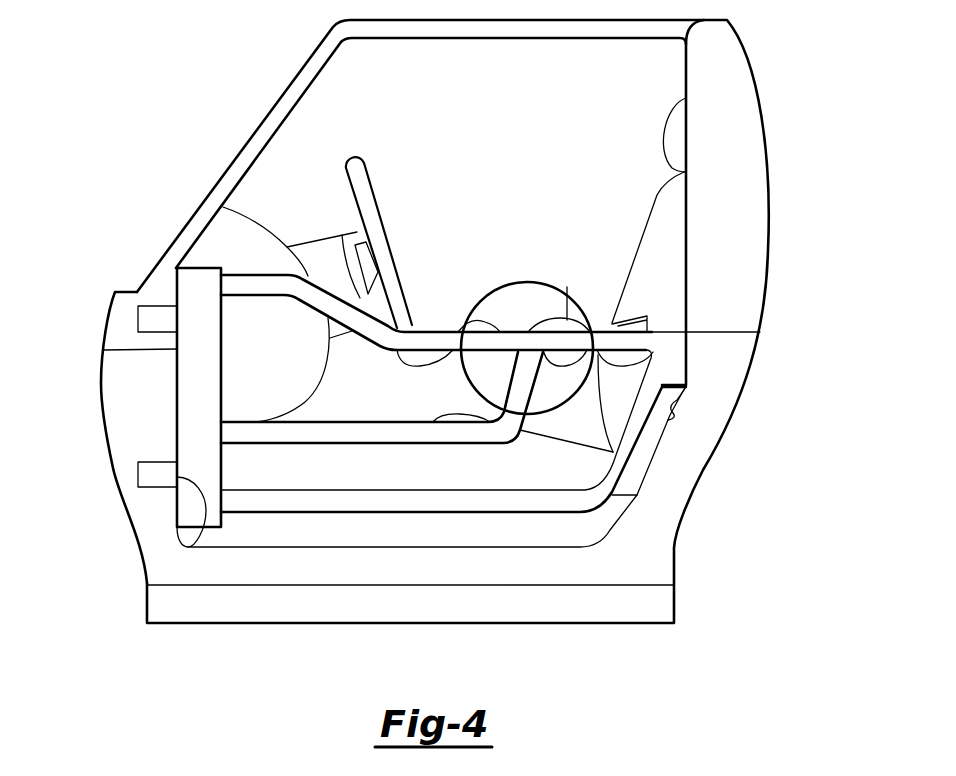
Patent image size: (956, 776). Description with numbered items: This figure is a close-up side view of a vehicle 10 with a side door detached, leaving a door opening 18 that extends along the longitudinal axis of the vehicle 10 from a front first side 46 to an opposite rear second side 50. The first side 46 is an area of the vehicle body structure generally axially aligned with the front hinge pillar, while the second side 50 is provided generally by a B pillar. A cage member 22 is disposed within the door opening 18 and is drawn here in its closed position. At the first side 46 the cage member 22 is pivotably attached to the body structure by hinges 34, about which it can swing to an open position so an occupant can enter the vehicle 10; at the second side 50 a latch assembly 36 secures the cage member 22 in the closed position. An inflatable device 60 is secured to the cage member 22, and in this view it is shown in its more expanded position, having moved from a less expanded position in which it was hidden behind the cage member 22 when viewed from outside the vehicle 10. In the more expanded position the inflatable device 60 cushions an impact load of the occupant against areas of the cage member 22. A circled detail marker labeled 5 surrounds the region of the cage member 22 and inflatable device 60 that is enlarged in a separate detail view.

The vehicle 10 is at (652, 548).
The door opening 18 is at (540, 243).
The cage member 22 is at (508, 280).
The hinges 34 is at (155, 474).
The latch assembly 36 is at (673, 367).
The first side 46 is at (200, 537).
The second side 50 is at (670, 412).
The inflatable device 60 is at (542, 280).
The detail view indicator 5 is at (527, 339).